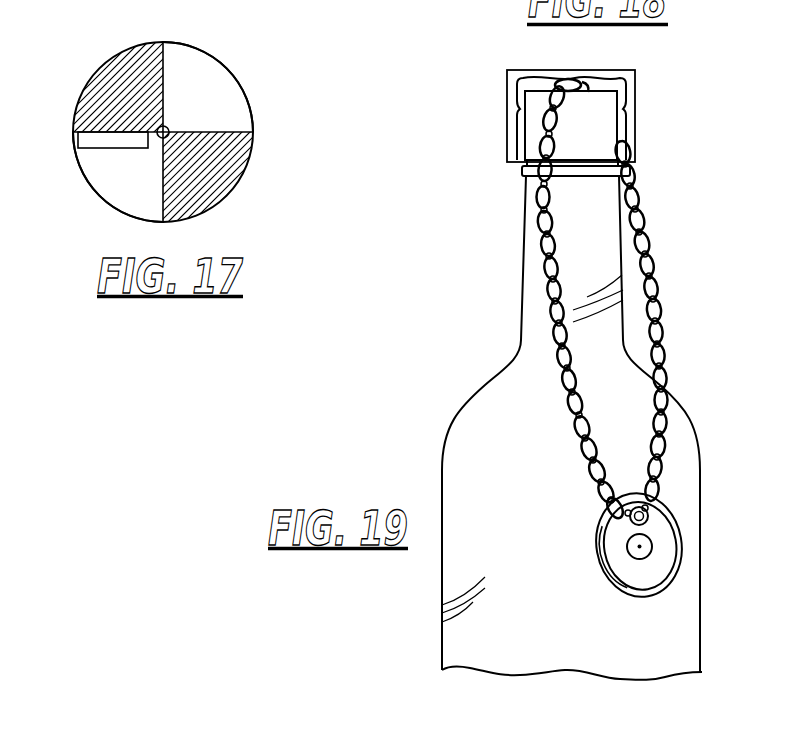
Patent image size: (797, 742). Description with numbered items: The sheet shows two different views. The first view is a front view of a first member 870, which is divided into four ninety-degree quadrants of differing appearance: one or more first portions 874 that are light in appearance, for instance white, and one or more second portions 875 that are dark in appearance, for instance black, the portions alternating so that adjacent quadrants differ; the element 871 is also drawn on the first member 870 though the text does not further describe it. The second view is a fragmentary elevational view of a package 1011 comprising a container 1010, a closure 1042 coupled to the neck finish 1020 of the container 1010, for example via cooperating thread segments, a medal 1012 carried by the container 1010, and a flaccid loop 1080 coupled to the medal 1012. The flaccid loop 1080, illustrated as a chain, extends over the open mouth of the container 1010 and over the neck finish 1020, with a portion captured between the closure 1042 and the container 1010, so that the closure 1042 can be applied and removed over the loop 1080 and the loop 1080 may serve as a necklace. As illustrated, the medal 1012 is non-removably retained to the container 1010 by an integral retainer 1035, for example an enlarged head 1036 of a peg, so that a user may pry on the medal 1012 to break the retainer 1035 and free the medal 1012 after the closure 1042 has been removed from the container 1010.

In FIG. 17, the first member 870 is at (238, 42).
In FIG. 17, the slot 871 is at (90, 152).
In FIG. 17, the first portions 874 is at (230, 93).
In FIG. 17, the second portions 875 is at (113, 88).
In FIG. 19, the container 1010 is at (422, 600).
In FIG. 19, the package 1011 is at (687, 167).
In FIG. 19, the medal 1012 is at (685, 525).
In FIG. 19, the neck finish 1020 is at (518, 127).
In FIG. 19, the integral retainer 1035 is at (660, 547).
In FIG. 19, the enlarged head 1036 is at (640, 548).
In FIG. 19, the closure 1042 is at (643, 80).
In FIG. 19, the flaccid loop 1080 is at (653, 248).